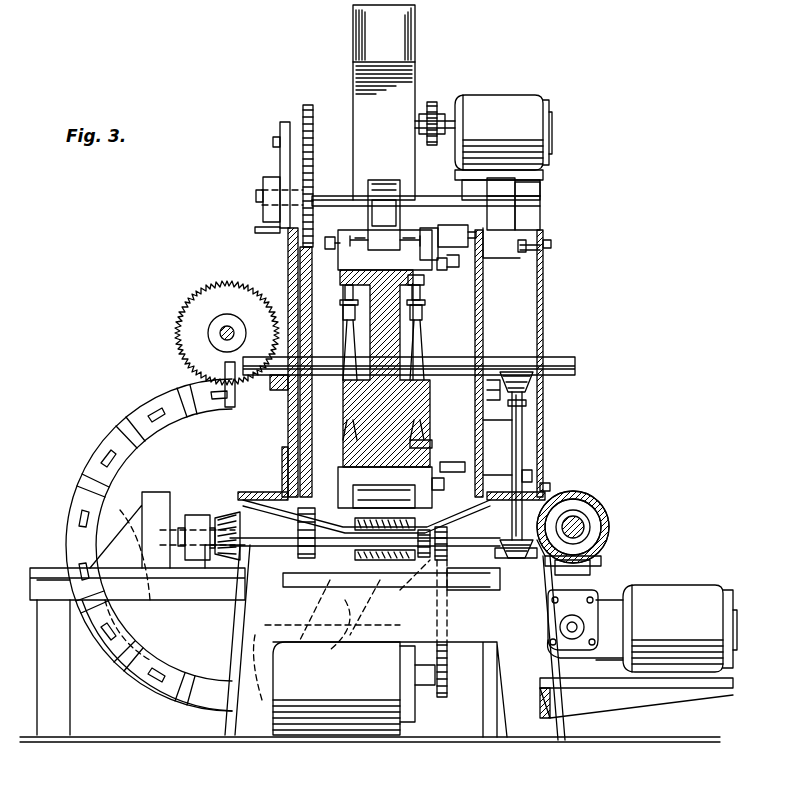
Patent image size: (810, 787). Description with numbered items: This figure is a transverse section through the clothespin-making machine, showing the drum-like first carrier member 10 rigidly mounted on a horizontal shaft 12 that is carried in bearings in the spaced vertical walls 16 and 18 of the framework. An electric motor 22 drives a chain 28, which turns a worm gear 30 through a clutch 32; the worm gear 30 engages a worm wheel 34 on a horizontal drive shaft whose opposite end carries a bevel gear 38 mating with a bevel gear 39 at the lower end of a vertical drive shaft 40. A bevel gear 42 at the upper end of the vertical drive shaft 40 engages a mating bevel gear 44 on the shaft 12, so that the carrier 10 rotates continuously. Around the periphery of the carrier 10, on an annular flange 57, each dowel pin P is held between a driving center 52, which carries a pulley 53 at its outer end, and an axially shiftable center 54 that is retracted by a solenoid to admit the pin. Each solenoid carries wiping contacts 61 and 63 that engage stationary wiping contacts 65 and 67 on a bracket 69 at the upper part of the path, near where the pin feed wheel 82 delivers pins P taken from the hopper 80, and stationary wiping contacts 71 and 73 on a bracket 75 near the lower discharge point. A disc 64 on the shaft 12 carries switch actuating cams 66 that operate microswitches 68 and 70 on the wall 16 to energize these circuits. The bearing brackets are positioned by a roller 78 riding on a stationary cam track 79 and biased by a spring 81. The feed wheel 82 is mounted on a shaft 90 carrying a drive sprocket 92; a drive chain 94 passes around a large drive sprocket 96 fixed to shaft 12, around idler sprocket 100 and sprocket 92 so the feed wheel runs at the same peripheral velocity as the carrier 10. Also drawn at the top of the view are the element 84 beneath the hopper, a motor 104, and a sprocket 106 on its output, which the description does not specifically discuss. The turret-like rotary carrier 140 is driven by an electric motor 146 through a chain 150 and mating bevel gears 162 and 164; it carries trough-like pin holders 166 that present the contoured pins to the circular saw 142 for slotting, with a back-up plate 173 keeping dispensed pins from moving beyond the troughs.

The first carrier member 10 is at (404, 332).
The shaft 12 is at (460, 357).
The vertical wall 16 is at (484, 320).
The vertical wall 18 is at (287, 302).
The electric motor 22 is at (668, 592).
The chain 28 is at (590, 620).
The worm gear 30 is at (591, 527).
The clutch 32 is at (598, 505).
The worm wheel 34 is at (592, 578).
The bevel gear 38 is at (500, 575).
The bevel gear 39 is at (496, 545).
The vertical drive shaft 40 is at (522, 432).
The bevel gear 42 is at (486, 402).
The bevel gear 44 is at (514, 360).
The driving center 52 is at (349, 233).
The pulley 53 is at (329, 251).
The axially shiftable center 54 is at (409, 228).
The annular flange 57 is at (424, 282).
The wiping contact 61 is at (420, 245).
The wiping contact 63 is at (455, 245).
The disc 64 is at (545, 316).
The stationary wiping contact 65 is at (437, 265).
The switch actuating cam 66 is at (551, 244).
The stationary wiping contact 67 is at (449, 262).
The microswitch 68 is at (518, 247).
The bracket 69 is at (430, 308).
The microswitch 70 is at (532, 463).
The stationary wiping contact 71 is at (436, 480).
The stationary wiping contact 73 is at (444, 485).
The bracket 75 is at (432, 443).
The roller 78 is at (344, 293).
The stationary cam track 79 is at (346, 326).
The hopper 80 is at (384, 102).
The spring 81 is at (455, 460).
The pin feed wheel 82 is at (373, 192).
The slide 84 is at (396, 194).
The shaft 90 is at (330, 196).
The drive sprocket 92 is at (285, 180).
The drive chain 94 is at (308, 107).
The large drive sprocket 96 is at (320, 330).
The idler sprocket 100 is at (287, 127).
The motor 104 is at (508, 110).
The sprocket 106 is at (433, 102).
The rotary carrier 140 is at (163, 380).
The circular saw 142 is at (238, 288).
The electric motor 146 is at (360, 720).
The chain 150 is at (448, 652).
The bevel gear 162 is at (225, 515).
The bevel gear 164 is at (245, 548).
The pin holder 166 is at (80, 470).
The back-up plate 173 is at (160, 675).
The dowel pin P is at (400, 505).